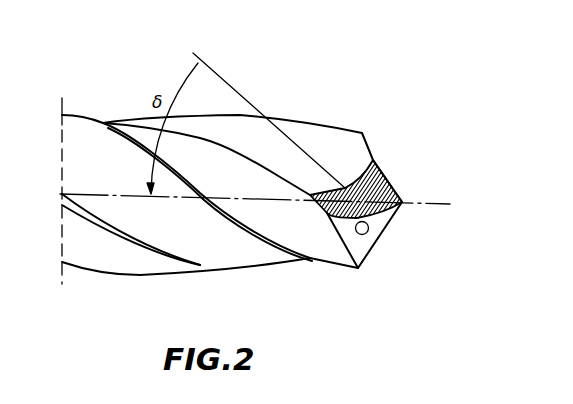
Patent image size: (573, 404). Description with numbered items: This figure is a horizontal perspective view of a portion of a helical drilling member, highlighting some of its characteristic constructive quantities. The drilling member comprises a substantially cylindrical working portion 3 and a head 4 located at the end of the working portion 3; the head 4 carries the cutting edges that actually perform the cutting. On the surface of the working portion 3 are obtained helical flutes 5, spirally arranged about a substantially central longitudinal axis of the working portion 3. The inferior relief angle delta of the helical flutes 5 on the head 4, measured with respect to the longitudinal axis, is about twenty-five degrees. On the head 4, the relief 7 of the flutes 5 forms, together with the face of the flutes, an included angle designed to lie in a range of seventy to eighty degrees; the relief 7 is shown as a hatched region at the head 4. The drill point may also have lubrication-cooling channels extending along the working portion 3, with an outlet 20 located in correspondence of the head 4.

The working portion 3 is at (123, 99).
The head 4 is at (384, 151).
The helical flutes 5 is at (234, 253).
The relief 7 is at (390, 170).
The outlet 20 is at (367, 232).